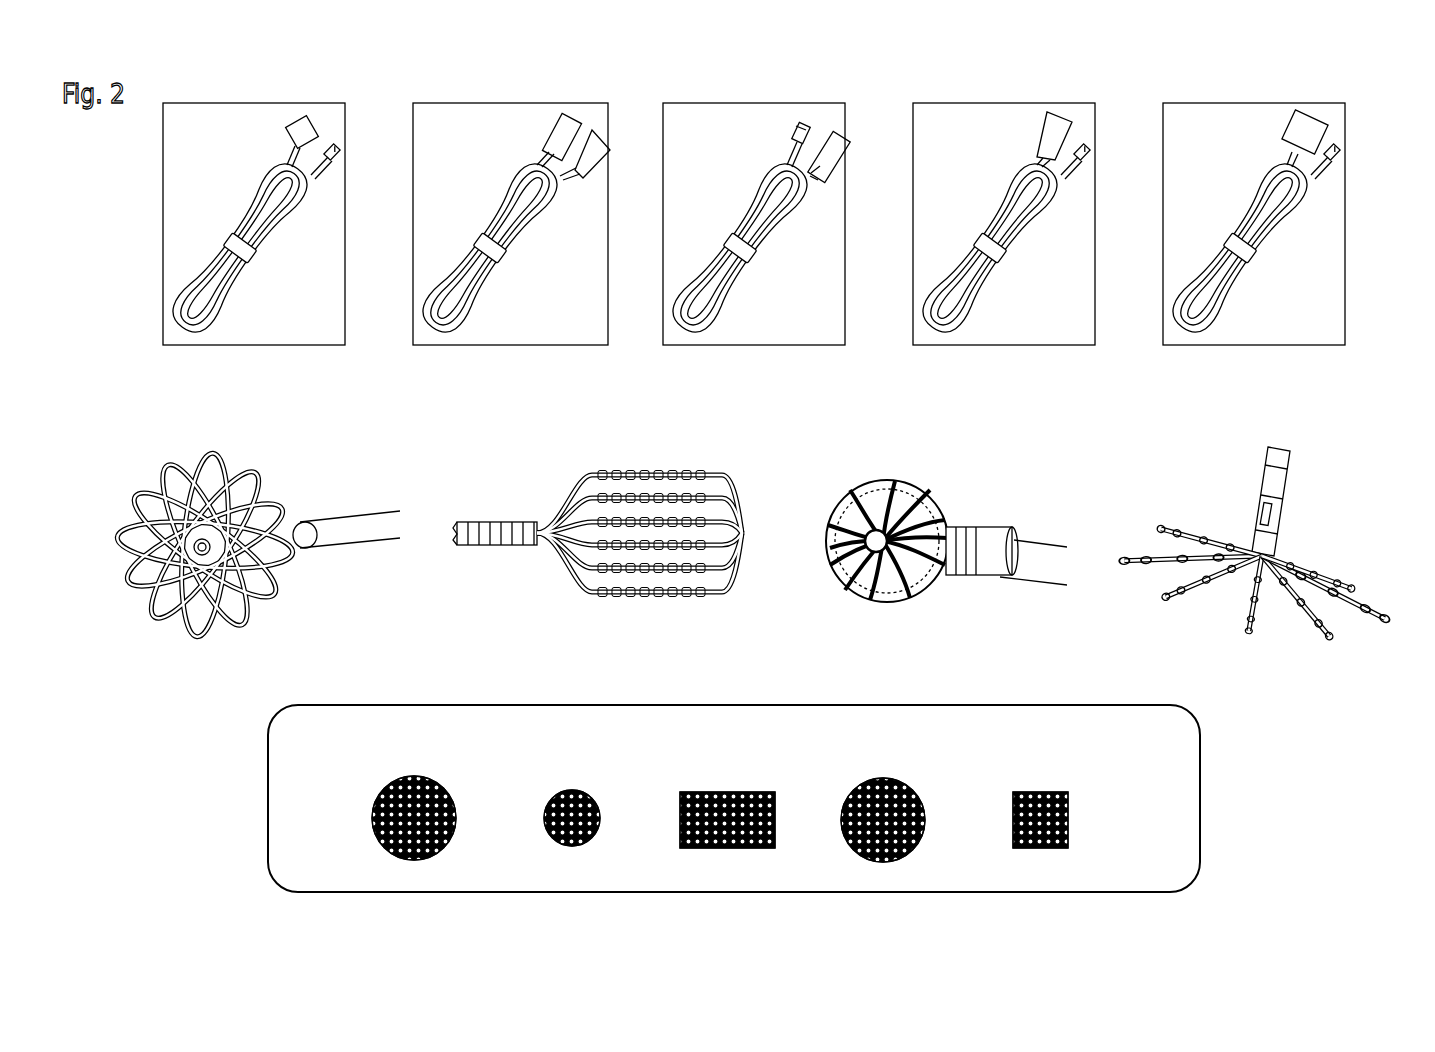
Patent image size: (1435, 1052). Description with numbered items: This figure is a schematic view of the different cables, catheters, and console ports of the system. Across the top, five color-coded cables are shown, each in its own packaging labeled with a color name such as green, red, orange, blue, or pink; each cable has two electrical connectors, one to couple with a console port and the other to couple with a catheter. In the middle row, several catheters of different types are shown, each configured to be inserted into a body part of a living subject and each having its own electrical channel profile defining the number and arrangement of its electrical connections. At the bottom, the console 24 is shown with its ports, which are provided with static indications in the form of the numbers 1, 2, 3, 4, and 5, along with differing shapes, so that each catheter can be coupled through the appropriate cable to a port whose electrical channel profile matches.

The console 24 is at (267, 798).
The port label 1 is at (414, 801).
The port label 2 is at (572, 794).
The port label 3 is at (727, 795).
The port label 4 is at (883, 802).
The port label 5 is at (1040, 795).